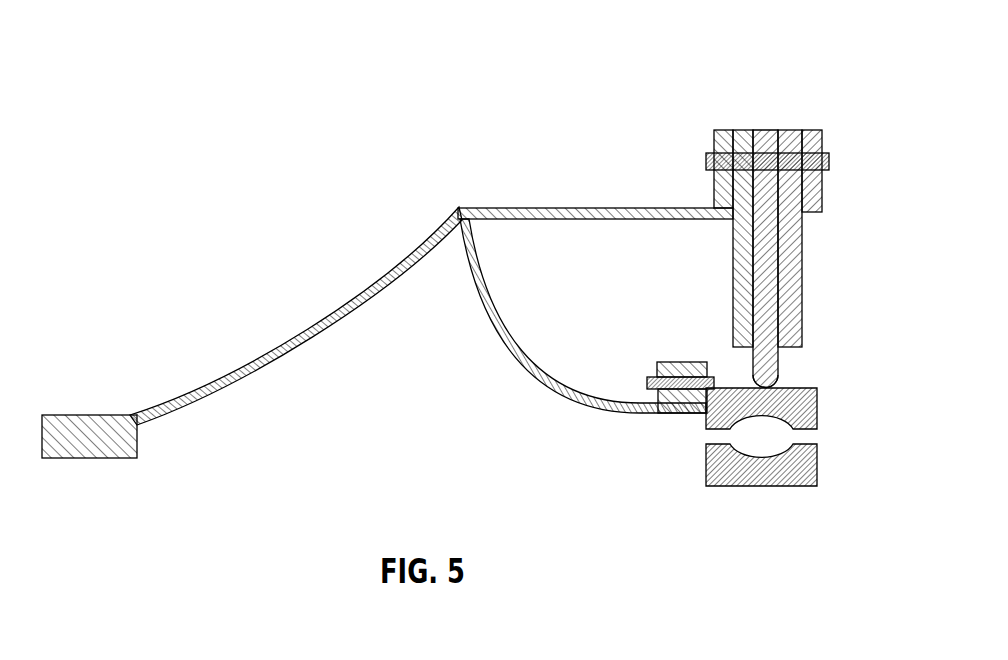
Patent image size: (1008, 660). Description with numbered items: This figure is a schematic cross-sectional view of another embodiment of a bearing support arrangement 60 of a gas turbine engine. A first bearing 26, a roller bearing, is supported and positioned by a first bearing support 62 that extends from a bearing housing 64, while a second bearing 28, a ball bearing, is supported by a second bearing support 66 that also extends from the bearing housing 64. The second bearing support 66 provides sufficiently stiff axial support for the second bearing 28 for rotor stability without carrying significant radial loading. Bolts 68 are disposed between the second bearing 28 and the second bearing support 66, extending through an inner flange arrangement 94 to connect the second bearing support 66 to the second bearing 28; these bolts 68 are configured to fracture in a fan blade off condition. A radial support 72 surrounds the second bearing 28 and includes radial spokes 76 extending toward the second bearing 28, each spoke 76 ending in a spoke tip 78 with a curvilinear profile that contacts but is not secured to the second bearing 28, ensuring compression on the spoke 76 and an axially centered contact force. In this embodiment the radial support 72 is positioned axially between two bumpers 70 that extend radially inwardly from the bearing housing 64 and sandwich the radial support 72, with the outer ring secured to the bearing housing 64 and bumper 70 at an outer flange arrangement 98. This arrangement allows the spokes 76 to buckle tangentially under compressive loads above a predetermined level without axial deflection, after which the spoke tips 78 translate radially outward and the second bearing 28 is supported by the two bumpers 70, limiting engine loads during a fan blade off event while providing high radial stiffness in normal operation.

The first bearing 26 is at (90, 442).
The second bearing 28 is at (728, 465).
The bearing support arrangement 60 is at (137, 103).
The first bearing support 62 is at (242, 370).
The bearing housing 64 is at (558, 208).
The second bearing support 66 is at (530, 383).
The bolts 68 is at (680, 360).
The bumper 70 is at (733, 232).
The radial support 72 is at (768, 142).
The radial spokes 76 is at (768, 297).
The spoke tip 78 is at (778, 375).
The inner flange arrangement 94 is at (632, 422).
The outer flange arrangement 98 is at (807, 108).